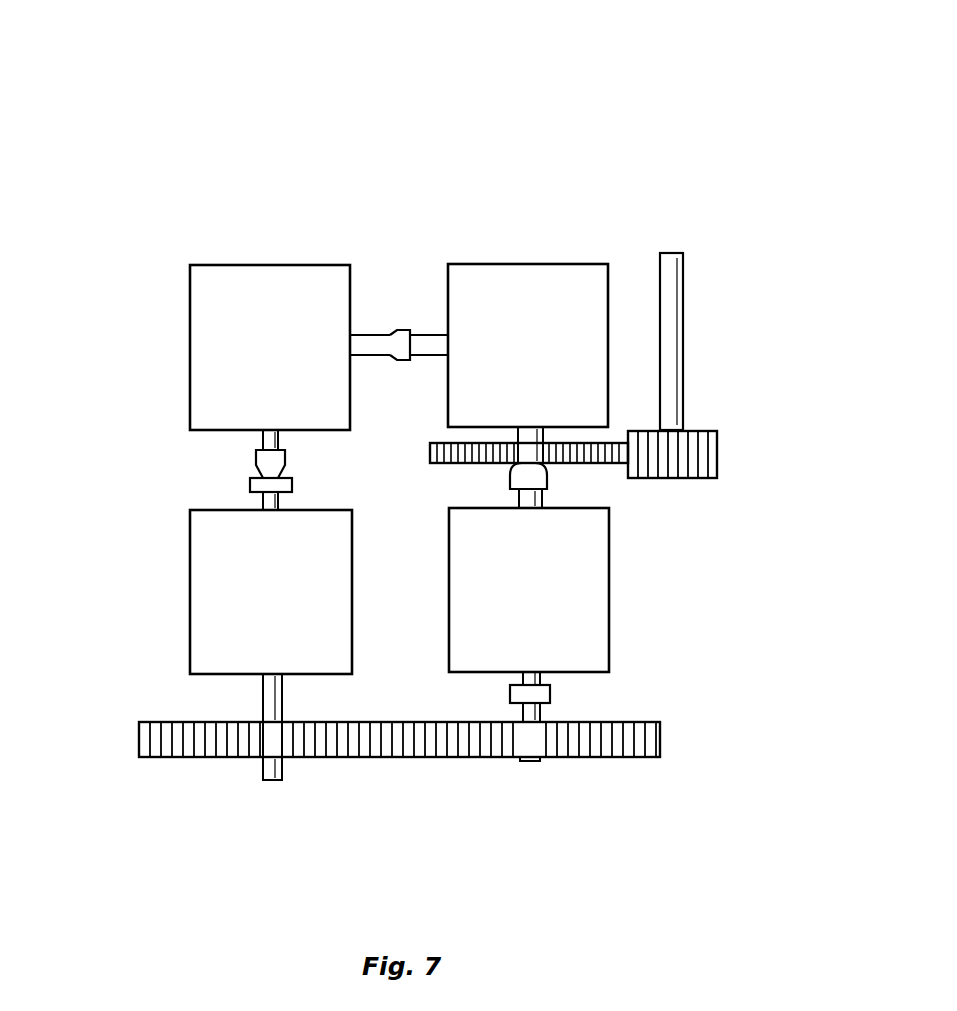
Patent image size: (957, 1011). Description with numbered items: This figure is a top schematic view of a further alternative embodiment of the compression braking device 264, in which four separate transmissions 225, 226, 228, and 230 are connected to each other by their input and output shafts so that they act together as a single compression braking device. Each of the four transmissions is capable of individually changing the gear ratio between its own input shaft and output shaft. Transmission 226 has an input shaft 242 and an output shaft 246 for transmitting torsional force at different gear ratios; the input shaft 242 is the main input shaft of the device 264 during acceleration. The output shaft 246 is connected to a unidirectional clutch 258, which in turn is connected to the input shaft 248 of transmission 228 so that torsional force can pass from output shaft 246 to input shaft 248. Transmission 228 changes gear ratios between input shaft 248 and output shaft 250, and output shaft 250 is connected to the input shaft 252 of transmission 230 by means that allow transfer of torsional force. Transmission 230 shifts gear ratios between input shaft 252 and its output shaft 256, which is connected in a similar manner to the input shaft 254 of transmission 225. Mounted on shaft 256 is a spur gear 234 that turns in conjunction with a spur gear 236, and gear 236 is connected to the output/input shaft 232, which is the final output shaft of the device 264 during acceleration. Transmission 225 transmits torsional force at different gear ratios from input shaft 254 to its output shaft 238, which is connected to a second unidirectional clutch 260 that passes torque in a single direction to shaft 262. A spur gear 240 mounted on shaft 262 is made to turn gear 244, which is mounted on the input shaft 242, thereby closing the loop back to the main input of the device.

The compression braking device 264 is at (443, 160).
The transmission 228 is at (248, 327).
The transmission 230 is at (519, 300).
The transmission 226 is at (225, 617).
The transmission 225 is at (588, 594).
The input shaft 252 is at (431, 335).
The output shaft 250 is at (398, 327).
The output/input shaft 232 is at (674, 326).
The spur gear 236 is at (717, 452).
The spur gear 234 is at (605, 443).
The output shaft 256 is at (528, 437).
The input shaft 254 is at (527, 497).
The input shaft 248 is at (262, 439).
The unidirectional clutch 258 is at (253, 472).
The output shaft 246 is at (262, 497).
The input shaft 242 is at (269, 782).
The spur gear 240 is at (480, 745).
The gear 244 is at (335, 745).
The output shaft 238 is at (535, 681).
The unidirectional clutch 260 is at (518, 693).
The shaft 262 is at (530, 712).